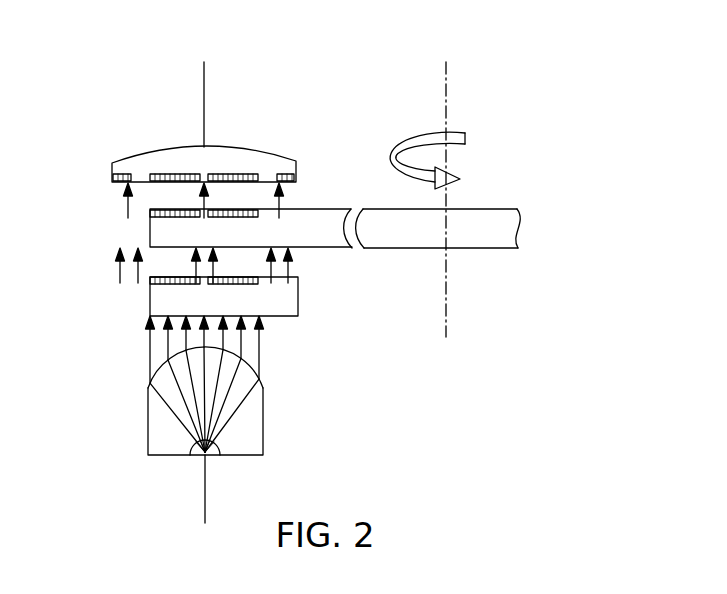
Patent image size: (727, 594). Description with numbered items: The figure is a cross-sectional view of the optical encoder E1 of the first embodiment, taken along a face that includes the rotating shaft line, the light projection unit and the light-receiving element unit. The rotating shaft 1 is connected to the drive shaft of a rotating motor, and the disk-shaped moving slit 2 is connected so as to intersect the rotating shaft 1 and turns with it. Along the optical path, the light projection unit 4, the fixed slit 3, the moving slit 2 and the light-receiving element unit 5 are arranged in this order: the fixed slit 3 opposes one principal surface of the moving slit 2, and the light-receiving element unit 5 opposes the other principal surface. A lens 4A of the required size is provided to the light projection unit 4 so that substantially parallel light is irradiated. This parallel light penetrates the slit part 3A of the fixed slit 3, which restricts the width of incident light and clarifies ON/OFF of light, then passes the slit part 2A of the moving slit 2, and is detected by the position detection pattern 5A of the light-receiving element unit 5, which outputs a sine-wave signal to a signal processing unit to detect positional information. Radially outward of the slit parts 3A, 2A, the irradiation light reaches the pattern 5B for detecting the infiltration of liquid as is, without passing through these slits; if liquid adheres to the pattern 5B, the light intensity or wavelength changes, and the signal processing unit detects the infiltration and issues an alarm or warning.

The rotating shaft 1 is at (447, 308).
The moving slit 2 is at (150, 230).
The slit part of the moving slit 2A is at (250, 214).
The fixed slit 3 is at (150, 302).
The slit part of the fixed slit 3A is at (250, 282).
The light projection unit 4 is at (148, 425).
The lens 4A is at (264, 386).
The light-receiving element unit 5 is at (138, 148).
The position detection pattern 5A is at (231, 174).
The pattern for detecting infiltration of liquid 5B is at (281, 175).
The optical encoder E1 is at (535, 105).